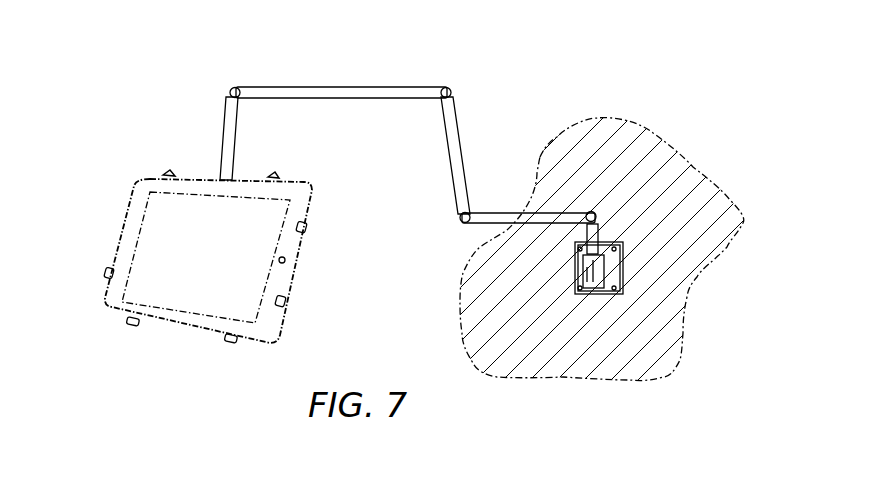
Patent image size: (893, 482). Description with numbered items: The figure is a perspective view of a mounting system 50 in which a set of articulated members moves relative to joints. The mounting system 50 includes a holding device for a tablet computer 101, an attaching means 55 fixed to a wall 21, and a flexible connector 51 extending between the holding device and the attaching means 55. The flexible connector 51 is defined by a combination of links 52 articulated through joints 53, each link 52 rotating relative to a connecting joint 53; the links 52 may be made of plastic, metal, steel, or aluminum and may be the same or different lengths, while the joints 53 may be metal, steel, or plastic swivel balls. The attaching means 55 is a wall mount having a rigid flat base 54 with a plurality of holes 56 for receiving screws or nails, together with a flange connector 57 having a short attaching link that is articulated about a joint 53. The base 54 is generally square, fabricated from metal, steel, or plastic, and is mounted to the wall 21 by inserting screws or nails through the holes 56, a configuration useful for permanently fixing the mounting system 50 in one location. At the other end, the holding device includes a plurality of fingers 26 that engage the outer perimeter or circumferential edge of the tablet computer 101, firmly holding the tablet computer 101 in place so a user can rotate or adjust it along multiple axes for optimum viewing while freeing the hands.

The wall 21 is at (527, 336).
The fingers 26 is at (180, 176).
The mounting system 50 is at (413, 112).
The flexible connector 51 is at (279, 85).
The links 52 is at (449, 134).
The joints 53 is at (233, 88).
The rigid flat base 54 is at (644, 276).
The attaching means 55 is at (594, 190).
The holes 56 is at (613, 244).
The flange connector 57 is at (591, 284).
The tablet computer 101 is at (202, 265).